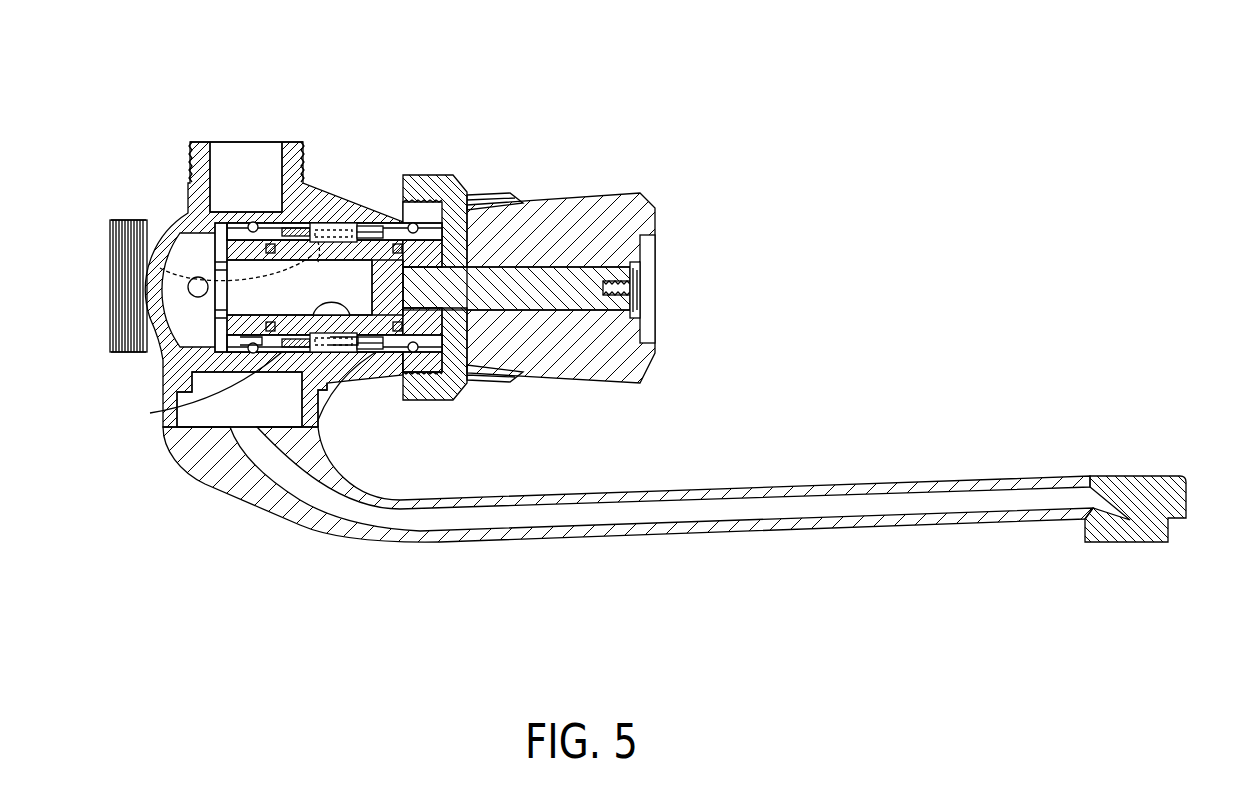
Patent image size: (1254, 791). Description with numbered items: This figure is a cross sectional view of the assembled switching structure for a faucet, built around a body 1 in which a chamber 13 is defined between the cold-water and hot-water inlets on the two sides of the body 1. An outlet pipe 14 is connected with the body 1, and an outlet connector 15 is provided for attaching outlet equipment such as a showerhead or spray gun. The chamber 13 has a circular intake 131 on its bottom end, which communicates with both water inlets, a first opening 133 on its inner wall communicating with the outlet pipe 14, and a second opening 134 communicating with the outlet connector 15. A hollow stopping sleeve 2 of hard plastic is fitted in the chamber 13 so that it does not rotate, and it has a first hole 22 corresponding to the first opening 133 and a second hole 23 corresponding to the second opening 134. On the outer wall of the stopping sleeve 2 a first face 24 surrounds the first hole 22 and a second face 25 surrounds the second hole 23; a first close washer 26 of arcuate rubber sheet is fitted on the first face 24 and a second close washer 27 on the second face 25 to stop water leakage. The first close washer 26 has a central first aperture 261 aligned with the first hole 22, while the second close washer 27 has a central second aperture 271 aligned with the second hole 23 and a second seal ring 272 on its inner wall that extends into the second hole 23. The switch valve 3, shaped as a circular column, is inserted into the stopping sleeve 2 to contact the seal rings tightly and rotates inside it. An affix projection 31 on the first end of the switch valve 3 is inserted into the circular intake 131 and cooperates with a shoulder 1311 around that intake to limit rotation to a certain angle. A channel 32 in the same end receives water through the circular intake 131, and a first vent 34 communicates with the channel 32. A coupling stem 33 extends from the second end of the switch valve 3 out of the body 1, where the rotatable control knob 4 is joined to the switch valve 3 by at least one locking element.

The body 1 is at (183, 137).
The stopping sleeve 2 is at (212, 221).
The switch valve 3 is at (458, 200).
The rotatable control knob 4 is at (675, 212).
The chamber 13 is at (446, 215).
The outlet pipe 14 is at (505, 540).
The outlet connector 15 is at (206, 145).
The first hole 22 is at (318, 330).
The second hole 23 is at (213, 262).
The first face 24 is at (235, 398).
The second face 25 is at (255, 222).
The first close washer 26 is at (364, 333).
The second close washer 27 is at (362, 237).
The affix projection 31 is at (215, 248).
The channel 32 is at (252, 307).
The coupling stem 33 is at (565, 275).
The first vent 34 is at (340, 312).
The circular intake 131 is at (218, 302).
The first opening 133 is at (720, 505).
The second opening 134 is at (294, 226).
The first aperture 261 is at (352, 340).
The second aperture 271 is at (318, 224).
The second seal ring 272 is at (338, 238).
The shoulder 1311 is at (167, 343).